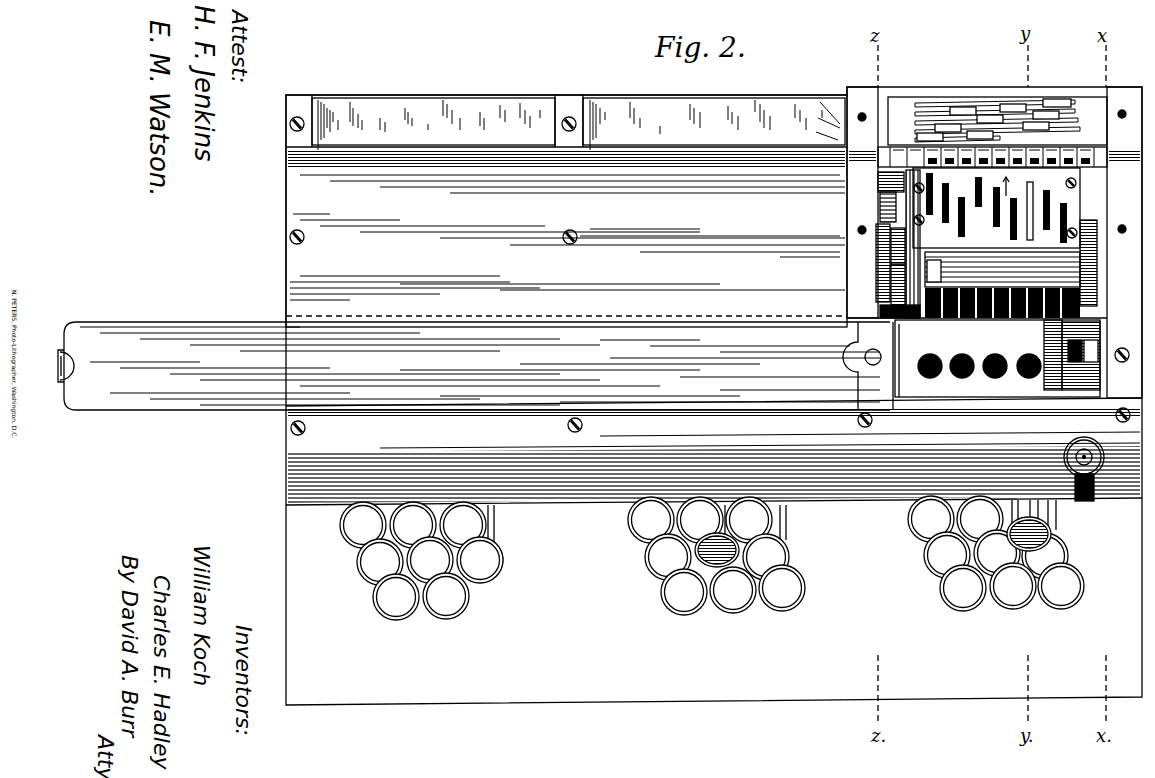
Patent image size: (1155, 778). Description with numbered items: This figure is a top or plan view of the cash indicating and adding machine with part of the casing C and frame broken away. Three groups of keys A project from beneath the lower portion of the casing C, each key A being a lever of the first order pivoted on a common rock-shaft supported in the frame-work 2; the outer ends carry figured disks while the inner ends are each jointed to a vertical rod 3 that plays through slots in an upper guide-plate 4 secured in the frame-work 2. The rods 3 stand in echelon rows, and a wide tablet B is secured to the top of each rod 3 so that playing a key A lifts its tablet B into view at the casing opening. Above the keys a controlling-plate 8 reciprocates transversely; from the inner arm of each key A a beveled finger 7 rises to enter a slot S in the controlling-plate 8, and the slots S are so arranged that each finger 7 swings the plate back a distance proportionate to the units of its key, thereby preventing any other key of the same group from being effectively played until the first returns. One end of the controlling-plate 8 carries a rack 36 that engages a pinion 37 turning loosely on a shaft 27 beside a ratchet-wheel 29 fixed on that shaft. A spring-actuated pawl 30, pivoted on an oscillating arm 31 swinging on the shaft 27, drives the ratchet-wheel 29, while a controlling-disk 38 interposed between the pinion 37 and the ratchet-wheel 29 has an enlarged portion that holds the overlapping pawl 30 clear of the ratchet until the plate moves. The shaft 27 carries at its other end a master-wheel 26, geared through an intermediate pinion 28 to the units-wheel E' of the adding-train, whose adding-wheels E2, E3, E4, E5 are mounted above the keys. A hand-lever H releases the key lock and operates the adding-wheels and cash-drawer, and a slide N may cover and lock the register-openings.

The key A is at (497, 529).
The tablet B is at (997, 108).
The casing C is at (714, 300).
The slide N is at (475, 366).
The hand-lever H is at (1083, 449).
The slot S is at (996, 207).
The frame-work 2 is at (994, 242).
The rod 3 is at (1084, 105).
The upper guide-plate 4 is at (1087, 135).
The finger 7 is at (1031, 230).
The controlling-plate 8 is at (1052, 177).
The master-wheel 26 is at (1088, 222).
The shaft 27 is at (1002, 285).
The intermediate pinion 28 is at (1092, 330).
The ratchet-wheel 29 is at (878, 268).
The pawl 30 is at (895, 258).
The oscillating arm 31 is at (892, 240).
The rack 36 is at (925, 240).
The pinion 37 is at (944, 271).
The controlling-disk 38 is at (899, 244).
The units-wheel E' is at (997, 358).
The adding-wheel E2 is at (1028, 374).
The adding-wheel E3 is at (994, 374).
The adding-wheel E4 is at (961, 374).
The adding-wheel E5 is at (928, 374).